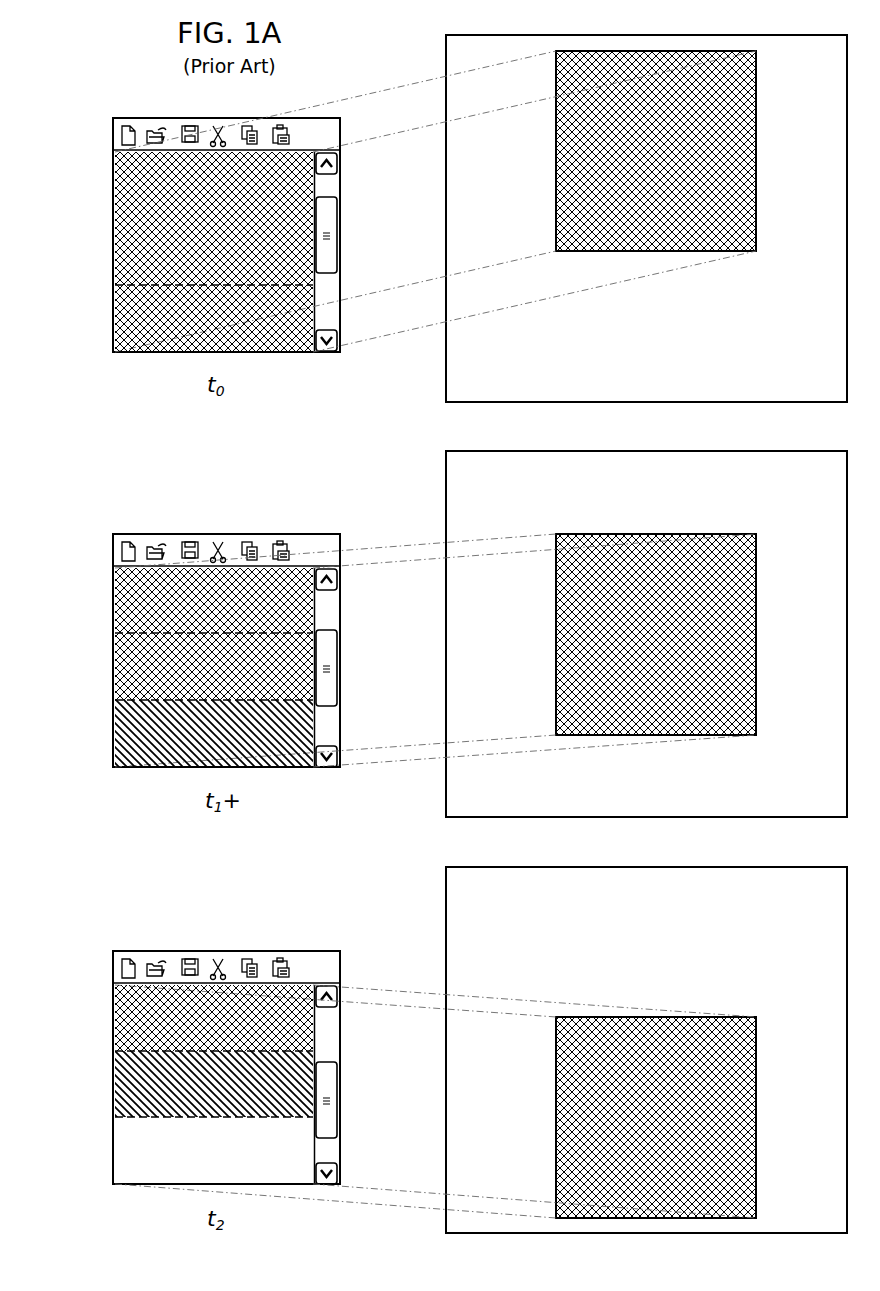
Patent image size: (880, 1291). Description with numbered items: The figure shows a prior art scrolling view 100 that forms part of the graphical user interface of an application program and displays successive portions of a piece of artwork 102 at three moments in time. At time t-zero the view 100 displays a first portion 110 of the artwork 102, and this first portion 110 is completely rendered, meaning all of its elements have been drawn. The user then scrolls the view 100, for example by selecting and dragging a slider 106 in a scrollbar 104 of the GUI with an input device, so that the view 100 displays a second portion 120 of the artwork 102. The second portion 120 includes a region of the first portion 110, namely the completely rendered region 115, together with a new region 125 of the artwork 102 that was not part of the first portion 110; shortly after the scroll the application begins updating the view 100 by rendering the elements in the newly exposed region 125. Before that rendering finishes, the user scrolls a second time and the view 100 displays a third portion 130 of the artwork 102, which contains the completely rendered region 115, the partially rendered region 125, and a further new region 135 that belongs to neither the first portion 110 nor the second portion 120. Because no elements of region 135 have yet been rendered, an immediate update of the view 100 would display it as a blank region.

The scrolling view 100 is at (101, 134).
The artwork 102 is at (835, 392).
The scrollbar 104 is at (330, 183).
The slider 106 is at (330, 250).
The first portion 110 is at (98, 152).
The region 115 is at (197, 329).
The second portion 120 is at (90, 568).
The new region 125 is at (197, 746).
The third portion 130 is at (90, 985).
The new region 135 is at (197, 1163).